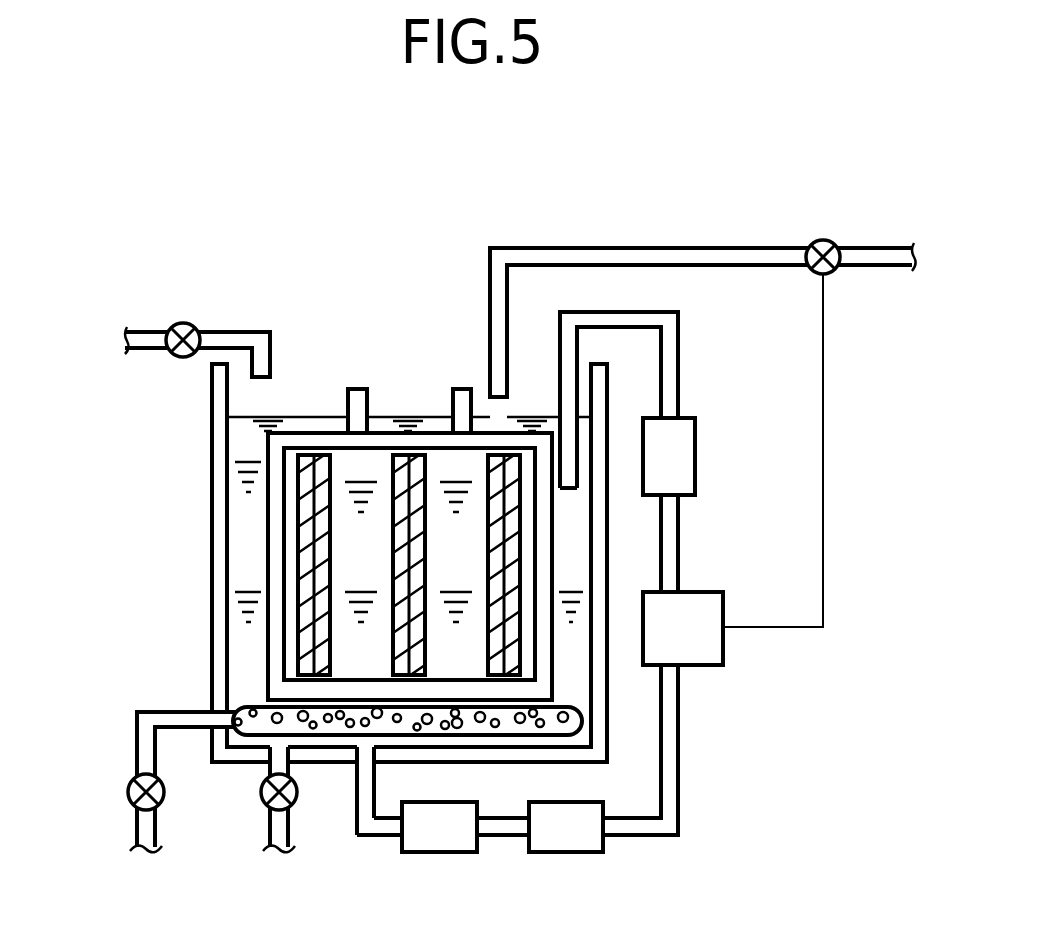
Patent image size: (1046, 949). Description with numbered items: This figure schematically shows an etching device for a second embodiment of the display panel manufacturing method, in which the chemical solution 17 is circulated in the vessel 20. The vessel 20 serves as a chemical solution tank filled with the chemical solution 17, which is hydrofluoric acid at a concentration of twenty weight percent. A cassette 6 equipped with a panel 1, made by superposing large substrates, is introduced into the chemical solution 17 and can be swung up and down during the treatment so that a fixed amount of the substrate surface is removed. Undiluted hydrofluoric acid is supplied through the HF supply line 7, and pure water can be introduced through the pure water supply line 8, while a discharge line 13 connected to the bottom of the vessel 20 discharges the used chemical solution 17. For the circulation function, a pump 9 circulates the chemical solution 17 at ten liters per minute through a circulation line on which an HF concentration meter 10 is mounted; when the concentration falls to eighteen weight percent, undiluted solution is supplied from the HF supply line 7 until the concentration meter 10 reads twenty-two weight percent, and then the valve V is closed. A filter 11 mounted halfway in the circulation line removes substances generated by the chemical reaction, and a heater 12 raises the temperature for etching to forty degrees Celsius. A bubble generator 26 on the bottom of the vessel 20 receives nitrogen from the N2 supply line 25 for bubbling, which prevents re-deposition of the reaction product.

The panel 1 is at (276, 508).
The cassette 6 is at (306, 565).
The HF supply line 7 is at (645, 248).
The pure water supply line 8 is at (230, 332).
The pump 9 is at (696, 458).
The HF concentration meter 10 is at (700, 666).
The filter 11 is at (567, 852).
The heater 12 is at (440, 852).
The discharge line 13 is at (270, 831).
The chemical solution 17 is at (240, 661).
The vessel 20 is at (213, 421).
The N2 supply line 25 is at (137, 830).
The bubble generator 26 is at (582, 723).
The valve V is at (781, 409).